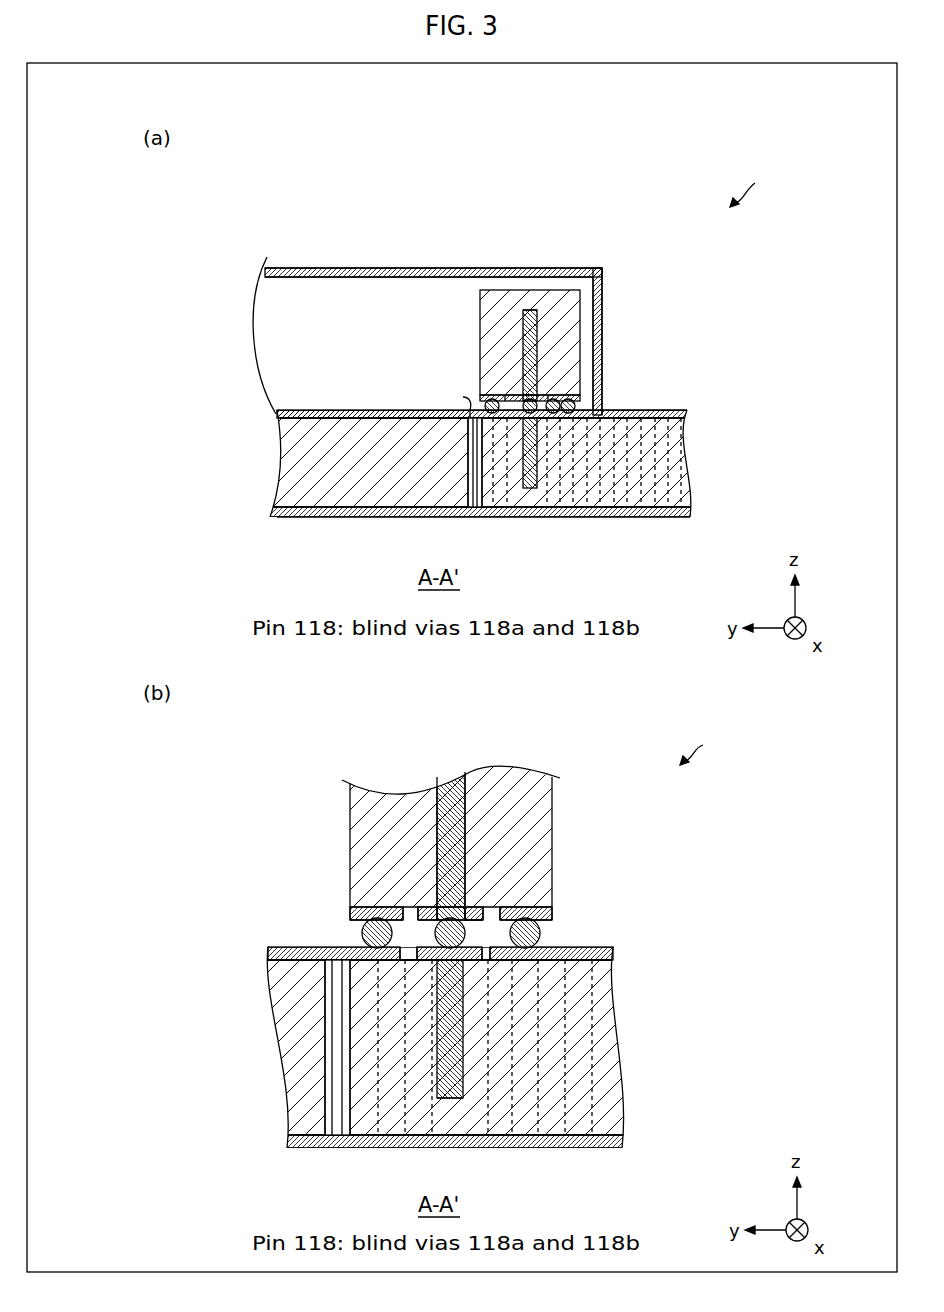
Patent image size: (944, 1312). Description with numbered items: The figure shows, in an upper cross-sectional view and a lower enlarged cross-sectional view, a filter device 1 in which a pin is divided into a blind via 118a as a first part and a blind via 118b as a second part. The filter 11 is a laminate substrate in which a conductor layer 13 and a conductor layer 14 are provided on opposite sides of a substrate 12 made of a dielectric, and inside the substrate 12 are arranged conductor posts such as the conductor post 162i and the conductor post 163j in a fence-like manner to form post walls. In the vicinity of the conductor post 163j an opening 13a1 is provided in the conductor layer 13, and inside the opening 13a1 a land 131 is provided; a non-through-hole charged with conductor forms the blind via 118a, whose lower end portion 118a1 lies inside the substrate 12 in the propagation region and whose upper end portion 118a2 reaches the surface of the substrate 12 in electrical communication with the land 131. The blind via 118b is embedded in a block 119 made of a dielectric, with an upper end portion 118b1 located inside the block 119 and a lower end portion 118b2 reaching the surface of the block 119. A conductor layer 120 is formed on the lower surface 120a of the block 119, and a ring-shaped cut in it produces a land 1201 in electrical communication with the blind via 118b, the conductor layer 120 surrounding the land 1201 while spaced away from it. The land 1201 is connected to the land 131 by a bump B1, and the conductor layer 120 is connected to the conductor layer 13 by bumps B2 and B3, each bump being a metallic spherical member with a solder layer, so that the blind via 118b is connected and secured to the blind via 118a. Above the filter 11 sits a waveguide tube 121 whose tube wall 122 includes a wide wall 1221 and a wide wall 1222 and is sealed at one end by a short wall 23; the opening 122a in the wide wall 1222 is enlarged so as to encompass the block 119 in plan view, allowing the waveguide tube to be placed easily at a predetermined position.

The filter device 1 is at (721, 459).
The filter 11 is at (698, 392).
The substrate 12 is at (394, 477).
The conductor layer 13 is at (640, 410).
The opening 13a1 is at (560, 402).
The conductor layer 14 is at (636, 519).
The short wall 23 is at (604, 318).
The block 119 is at (480, 318).
The conductor layer 120 is at (548, 900).
The lower surface of package substrate 120a is at (410, 910).
The land 1201 is at (478, 900).
The land 131 is at (485, 916).
The waveguide tube 121 is at (363, 234).
The shield case 122 is at (492, 256).
The opening 122a is at (463, 397).
The wide wall 1221 is at (446, 268).
The wide wall 1222 is at (347, 410).
The blind via 118a is at (523, 490).
The bottom end of blind via 118a 118a1 is at (452, 1100).
The end portion 118a2 is at (466, 966).
The blind via 118b is at (523, 342).
The upper end portion 118b1 is at (536, 310).
The lower end portion 118b2 is at (525, 392).
The conductor post 162i is at (600, 515).
The conductor post 163j is at (470, 500).
The bump B1 is at (445, 930).
The bump B2 is at (362, 933).
The bump B3 is at (545, 935).